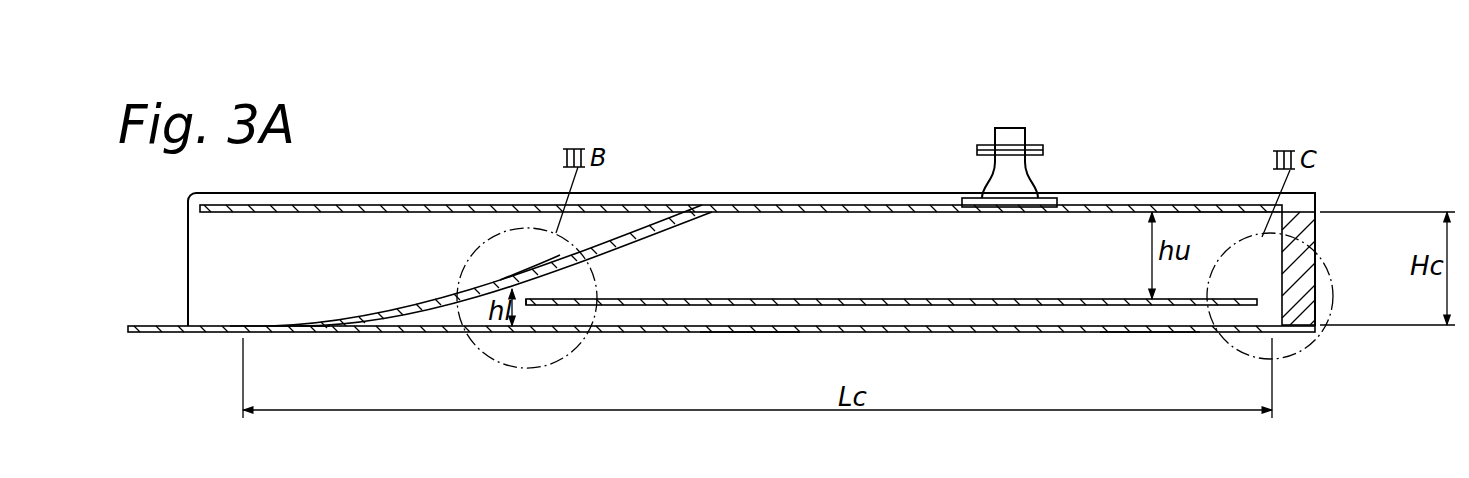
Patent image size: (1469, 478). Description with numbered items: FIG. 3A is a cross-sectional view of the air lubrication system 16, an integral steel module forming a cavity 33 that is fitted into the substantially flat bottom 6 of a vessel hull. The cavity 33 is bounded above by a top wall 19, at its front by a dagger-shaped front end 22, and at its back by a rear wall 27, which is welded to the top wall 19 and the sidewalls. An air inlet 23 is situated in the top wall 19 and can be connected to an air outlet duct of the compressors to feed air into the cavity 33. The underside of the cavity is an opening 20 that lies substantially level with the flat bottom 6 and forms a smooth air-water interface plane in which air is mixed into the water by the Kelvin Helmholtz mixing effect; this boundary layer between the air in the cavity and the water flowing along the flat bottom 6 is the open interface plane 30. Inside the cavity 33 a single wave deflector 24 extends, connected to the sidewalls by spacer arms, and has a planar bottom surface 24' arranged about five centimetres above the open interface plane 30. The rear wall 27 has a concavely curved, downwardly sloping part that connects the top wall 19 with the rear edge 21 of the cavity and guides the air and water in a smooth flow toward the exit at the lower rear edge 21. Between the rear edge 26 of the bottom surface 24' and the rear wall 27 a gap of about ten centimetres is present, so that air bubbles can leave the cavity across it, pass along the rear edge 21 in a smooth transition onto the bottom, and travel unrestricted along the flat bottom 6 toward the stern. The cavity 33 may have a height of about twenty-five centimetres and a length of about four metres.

The flat bottom 6 is at (142, 326).
The air lubrication system 16 is at (453, 189).
The top wall 19 is at (870, 210).
The opening 20 is at (1112, 338).
The rear edge 21 is at (252, 333).
The front end 22 is at (1316, 247).
The air inlet 23 is at (1025, 128).
The wave deflector 24 is at (891, 272).
The planar bottom surface 24' is at (750, 365).
The rear edge of the bottom surface 26 is at (523, 310).
The rear wall 27 is at (532, 272).
The open interface plane 30 is at (440, 333).
The cavity 33 is at (1203, 240).